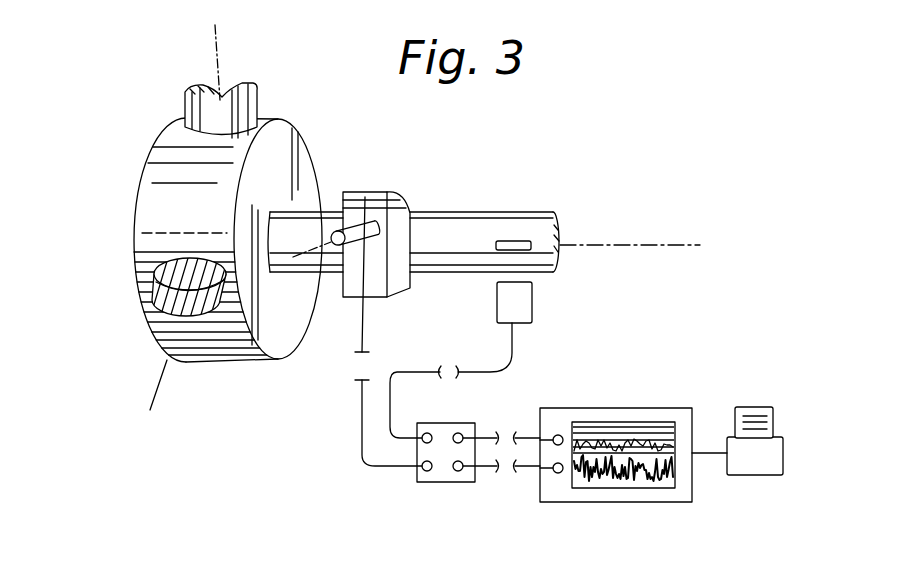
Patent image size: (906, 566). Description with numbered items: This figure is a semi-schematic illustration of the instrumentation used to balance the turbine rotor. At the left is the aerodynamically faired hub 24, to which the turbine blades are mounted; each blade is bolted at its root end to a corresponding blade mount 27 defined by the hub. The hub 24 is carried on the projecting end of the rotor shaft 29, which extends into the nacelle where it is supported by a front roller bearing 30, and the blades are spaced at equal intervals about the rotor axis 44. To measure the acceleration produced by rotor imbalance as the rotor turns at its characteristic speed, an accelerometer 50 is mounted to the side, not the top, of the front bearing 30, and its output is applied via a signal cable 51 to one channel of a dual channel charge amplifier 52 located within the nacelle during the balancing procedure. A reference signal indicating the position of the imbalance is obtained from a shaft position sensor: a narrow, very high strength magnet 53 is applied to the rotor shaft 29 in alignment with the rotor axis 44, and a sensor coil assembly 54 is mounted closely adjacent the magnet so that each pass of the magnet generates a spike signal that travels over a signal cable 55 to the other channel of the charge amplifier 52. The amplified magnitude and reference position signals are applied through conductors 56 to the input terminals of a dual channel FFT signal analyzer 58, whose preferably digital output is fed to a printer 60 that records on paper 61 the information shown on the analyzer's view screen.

The hub 24 is at (138, 191).
The blade mount 27 is at (153, 279).
The rotor shaft 29 is at (438, 212).
The front roller bearing 30 is at (388, 192).
The rotor axis 44 is at (622, 243).
The accelerometer 50 is at (363, 192).
The signal cable 51 is at (362, 325).
The dual channel charge amplifier 52 is at (432, 482).
The magnet 53 is at (512, 241).
The sensor coil assembly 54 is at (528, 300).
The signal cable 55 is at (510, 348).
The conductors 56 is at (493, 463).
The dual channel FFT signal analyzer 58 is at (632, 408).
The printer 60 is at (760, 475).
The paper 61 is at (757, 407).